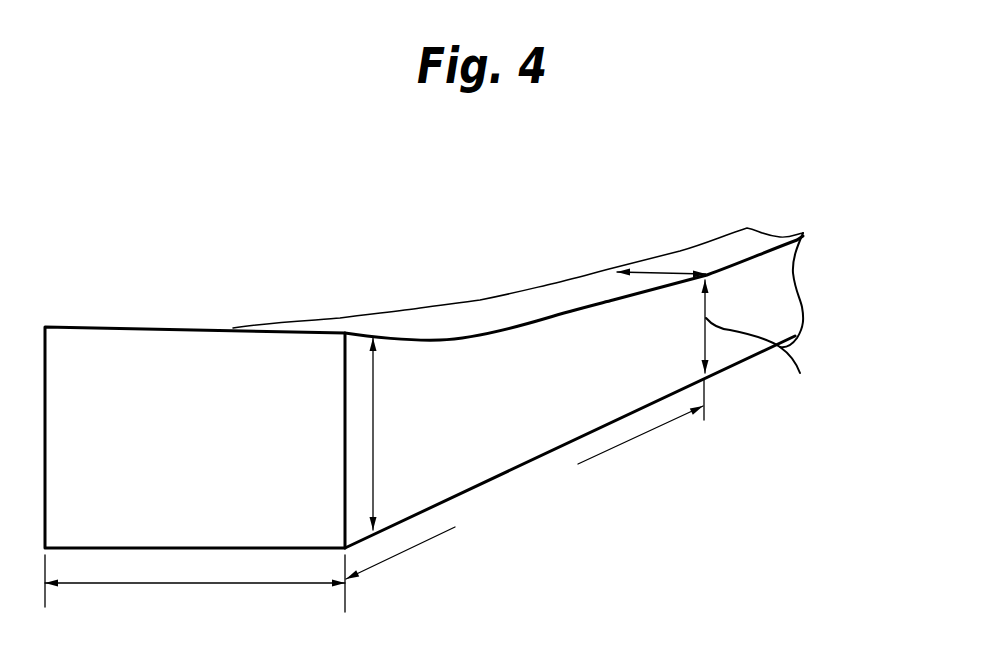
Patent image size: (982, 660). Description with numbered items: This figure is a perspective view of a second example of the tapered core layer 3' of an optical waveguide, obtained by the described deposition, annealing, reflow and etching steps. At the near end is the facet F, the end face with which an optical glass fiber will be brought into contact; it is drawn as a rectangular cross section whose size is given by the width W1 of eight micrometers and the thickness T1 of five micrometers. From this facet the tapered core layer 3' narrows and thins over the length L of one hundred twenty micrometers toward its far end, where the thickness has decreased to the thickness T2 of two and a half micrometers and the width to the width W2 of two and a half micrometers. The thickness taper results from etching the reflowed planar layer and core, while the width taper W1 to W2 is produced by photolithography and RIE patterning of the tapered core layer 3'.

The tapered core layer 3' is at (424, 372).
The facet F is at (133, 363).
The thickness T1 is at (435, 434).
The thickness T2 is at (783, 350).
The width W1 is at (195, 594).
The width W2 is at (663, 273).
The length L is at (524, 492).